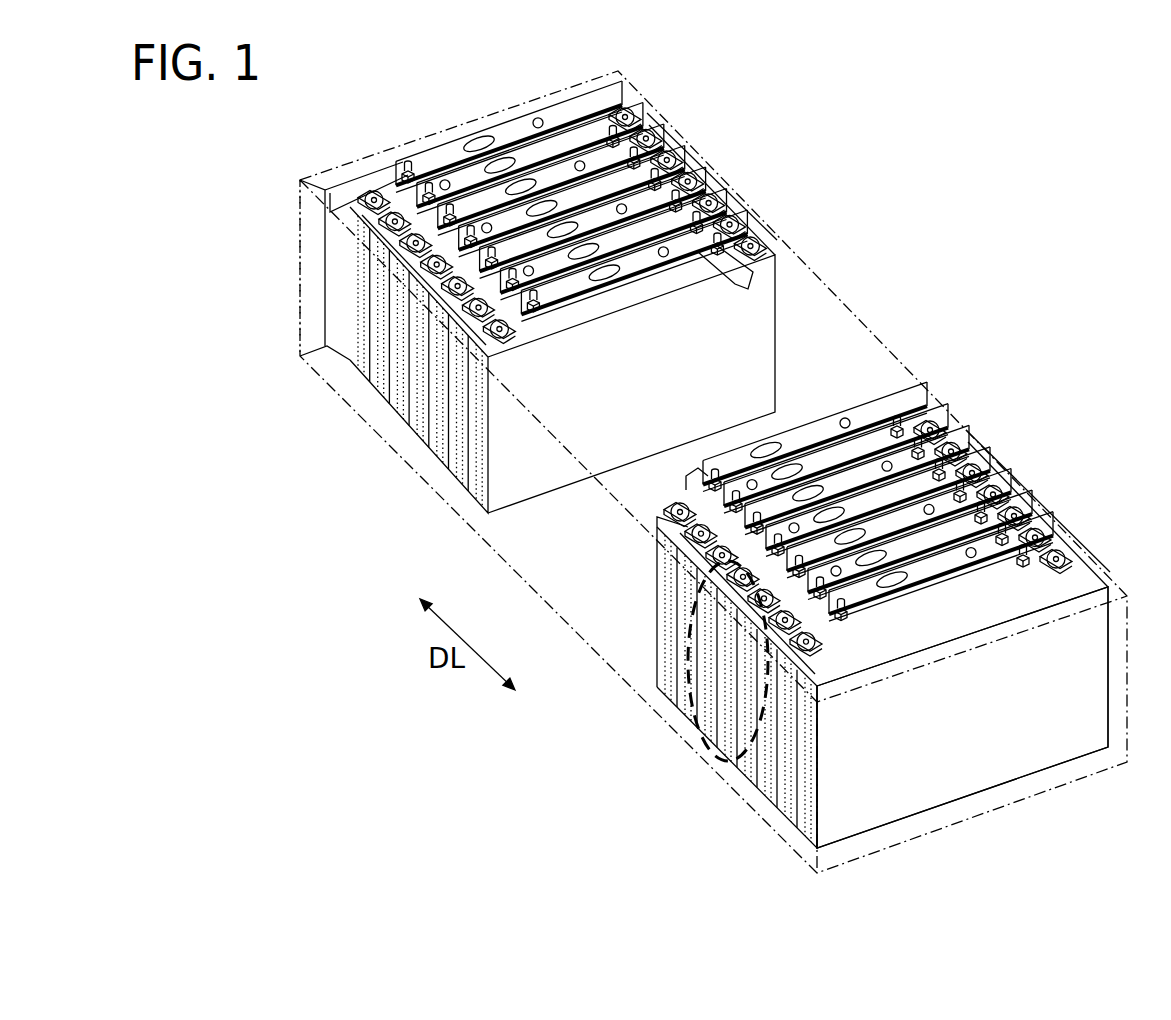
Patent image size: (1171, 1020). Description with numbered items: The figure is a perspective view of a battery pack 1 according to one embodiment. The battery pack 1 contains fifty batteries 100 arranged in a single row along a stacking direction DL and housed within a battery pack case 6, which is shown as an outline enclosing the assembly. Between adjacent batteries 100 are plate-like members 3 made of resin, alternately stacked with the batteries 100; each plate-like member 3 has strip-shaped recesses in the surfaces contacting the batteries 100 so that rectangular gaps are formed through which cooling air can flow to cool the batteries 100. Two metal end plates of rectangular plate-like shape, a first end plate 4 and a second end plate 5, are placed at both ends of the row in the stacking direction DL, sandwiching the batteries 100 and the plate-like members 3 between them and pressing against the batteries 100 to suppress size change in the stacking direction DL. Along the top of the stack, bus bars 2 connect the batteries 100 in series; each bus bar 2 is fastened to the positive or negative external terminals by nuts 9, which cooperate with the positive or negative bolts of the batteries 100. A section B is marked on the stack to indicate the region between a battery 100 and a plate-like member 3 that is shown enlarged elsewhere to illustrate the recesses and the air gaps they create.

The battery pack 1 is at (929, 290).
The bus bar 2 is at (425, 283).
The plate-like member 3 is at (368, 362).
The first end plate 4 is at (334, 345).
The second end plate 5 is at (980, 757).
The battery pack case 6 is at (915, 358).
The nut 9 is at (712, 222).
The battery 100 is at (357, 372).
The section B is at (672, 702).